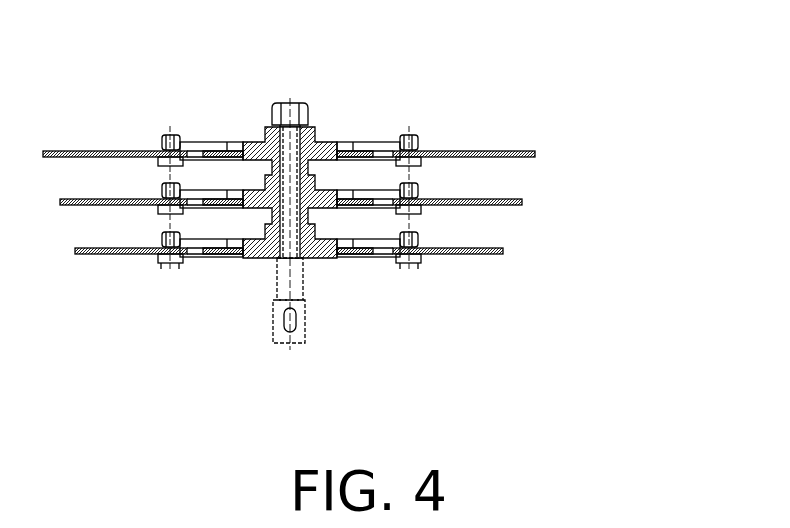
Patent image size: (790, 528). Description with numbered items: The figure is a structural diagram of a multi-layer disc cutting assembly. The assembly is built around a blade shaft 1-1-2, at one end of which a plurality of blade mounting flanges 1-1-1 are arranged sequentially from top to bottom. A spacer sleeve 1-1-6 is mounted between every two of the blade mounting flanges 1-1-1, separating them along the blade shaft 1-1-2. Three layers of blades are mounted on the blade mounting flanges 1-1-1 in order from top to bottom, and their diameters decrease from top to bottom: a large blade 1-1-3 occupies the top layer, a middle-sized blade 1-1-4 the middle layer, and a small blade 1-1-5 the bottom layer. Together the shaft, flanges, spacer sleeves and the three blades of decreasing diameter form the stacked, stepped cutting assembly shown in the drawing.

The blade mounting flange 1-1-1 is at (227, 152).
The blade shaft 1-1-2 is at (313, 130).
The large blade 1-1-3 is at (482, 153).
The middle-sized blade 1-1-4 is at (522, 203).
The small blade 1-1-5 is at (503, 251).
The spacer sleeve 1-1-6 is at (347, 258).